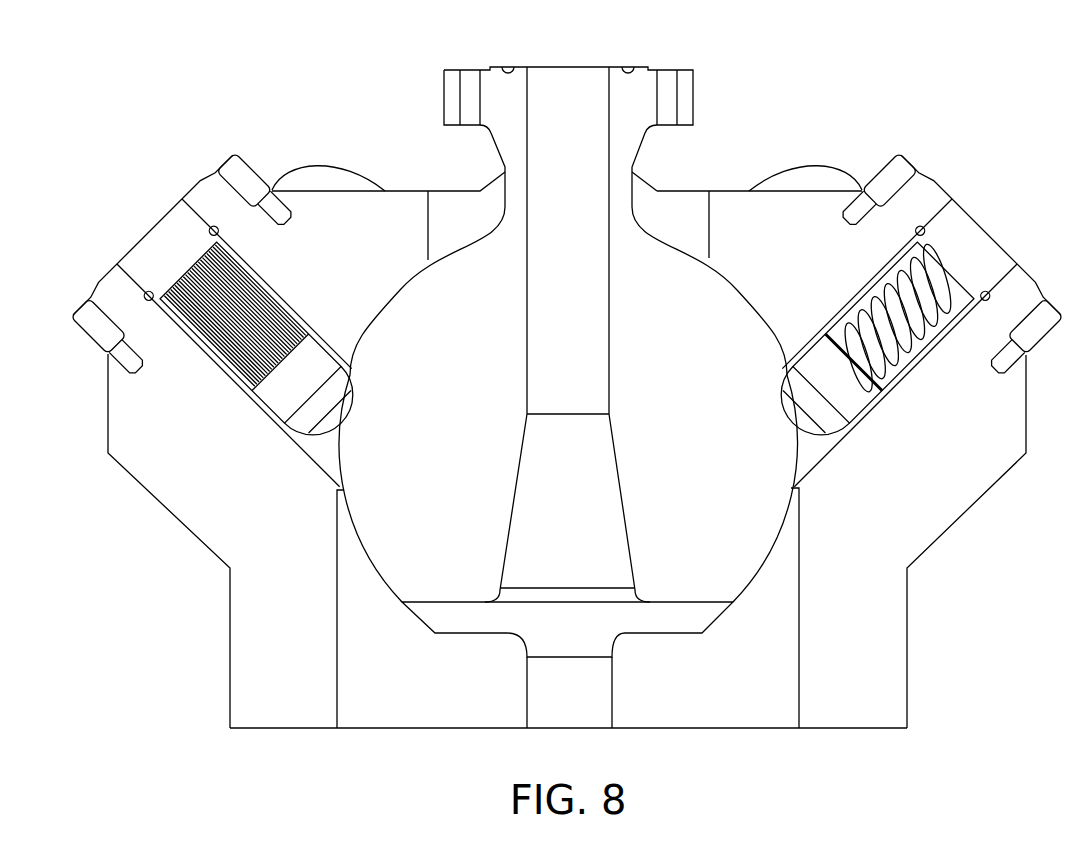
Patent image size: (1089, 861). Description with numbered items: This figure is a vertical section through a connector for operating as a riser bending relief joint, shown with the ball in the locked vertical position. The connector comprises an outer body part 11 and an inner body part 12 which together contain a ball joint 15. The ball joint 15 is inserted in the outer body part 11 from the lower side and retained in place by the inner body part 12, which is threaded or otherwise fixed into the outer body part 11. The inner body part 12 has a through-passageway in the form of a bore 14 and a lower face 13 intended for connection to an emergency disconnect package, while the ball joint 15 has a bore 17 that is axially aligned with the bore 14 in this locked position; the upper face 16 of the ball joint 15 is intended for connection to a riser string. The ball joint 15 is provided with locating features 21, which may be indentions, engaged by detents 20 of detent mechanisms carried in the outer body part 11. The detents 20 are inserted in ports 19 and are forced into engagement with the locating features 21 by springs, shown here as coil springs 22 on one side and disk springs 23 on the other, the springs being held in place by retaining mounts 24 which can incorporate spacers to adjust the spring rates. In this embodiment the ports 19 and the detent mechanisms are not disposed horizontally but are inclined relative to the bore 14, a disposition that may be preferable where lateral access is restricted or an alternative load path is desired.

The outer body part 11 is at (858, 728).
The inner body part 12 is at (715, 728).
The lower face 13 is at (421, 730).
The bore 14 is at (551, 704).
The ball joint 15 is at (635, 262).
The upper face 16 is at (630, 64).
The bore 17 is at (554, 172).
The ports 19 is at (300, 333).
The detents 20 is at (290, 402).
The locating features 21 is at (343, 437).
The coil springs 22 is at (905, 372).
The disk springs 23 is at (205, 294).
The retaining mounts 24 is at (143, 274).